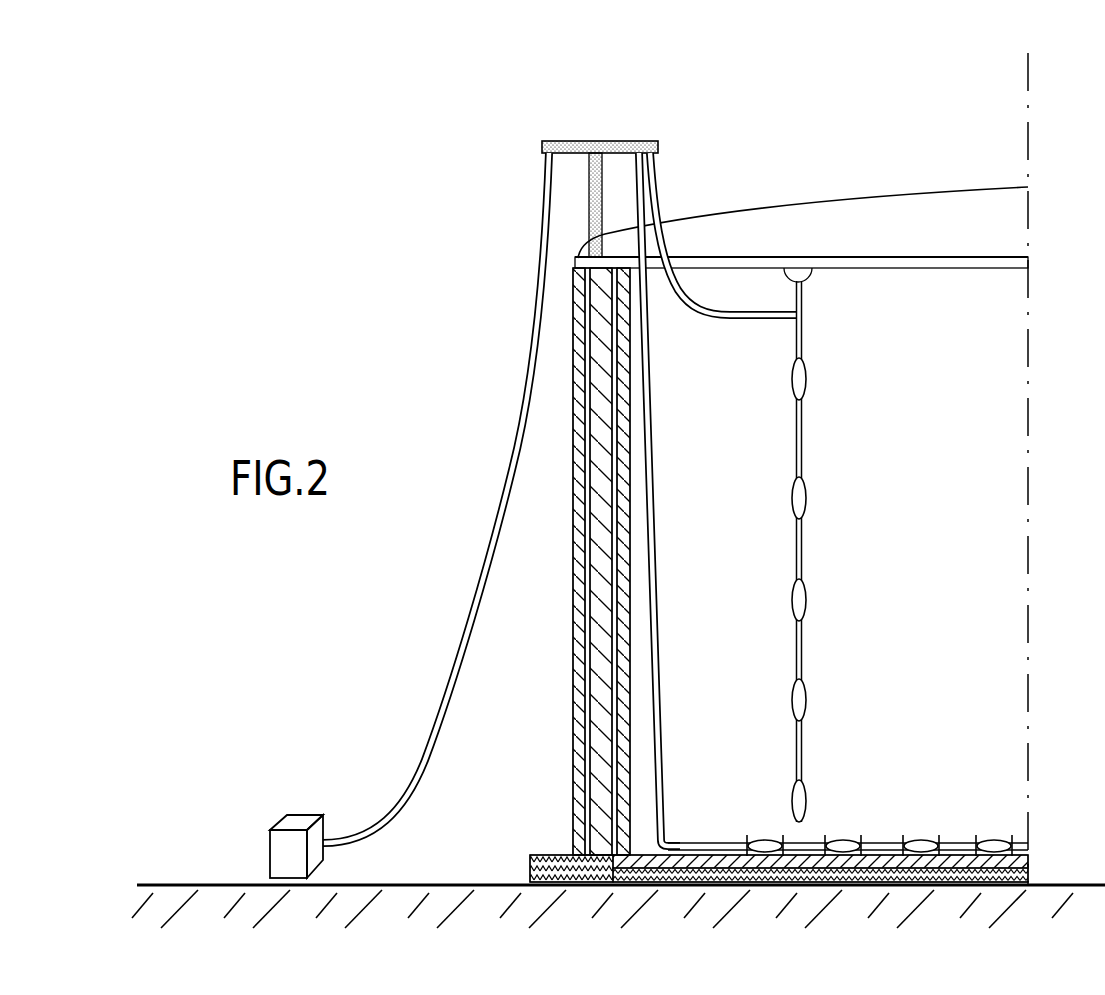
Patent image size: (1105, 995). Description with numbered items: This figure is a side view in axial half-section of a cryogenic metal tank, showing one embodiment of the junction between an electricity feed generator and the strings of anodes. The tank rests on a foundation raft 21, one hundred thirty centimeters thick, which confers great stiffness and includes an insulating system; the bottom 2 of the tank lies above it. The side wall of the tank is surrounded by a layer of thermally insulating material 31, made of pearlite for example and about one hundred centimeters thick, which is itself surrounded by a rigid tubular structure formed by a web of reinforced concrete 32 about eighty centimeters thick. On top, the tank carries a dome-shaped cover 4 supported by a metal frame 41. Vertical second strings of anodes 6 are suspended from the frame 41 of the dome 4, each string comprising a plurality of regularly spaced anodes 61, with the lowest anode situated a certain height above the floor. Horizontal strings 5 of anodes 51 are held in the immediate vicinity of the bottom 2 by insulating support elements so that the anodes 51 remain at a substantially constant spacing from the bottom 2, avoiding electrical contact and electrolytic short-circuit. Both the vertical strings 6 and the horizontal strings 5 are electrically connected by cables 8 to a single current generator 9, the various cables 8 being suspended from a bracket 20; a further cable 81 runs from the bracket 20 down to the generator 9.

The bottom of the tank 2 is at (802, 838).
The foundation raft 21 is at (1030, 875).
The bracket 20 is at (596, 142).
The layer of thermally insulating material 31 is at (600, 634).
The web of reinforced concrete 32 is at (571, 561).
The dome-shaped cover 4 is at (848, 200).
The metal frame 41 is at (1031, 262).
The horizontal strings 5 is at (848, 799).
The anodes 51 is at (920, 839).
The second strings of anodes 6 is at (844, 551).
The anodes 61 is at (807, 498).
The cables 8 is at (706, 318).
The supply cable 81 is at (495, 547).
The current generator 9 is at (298, 813).